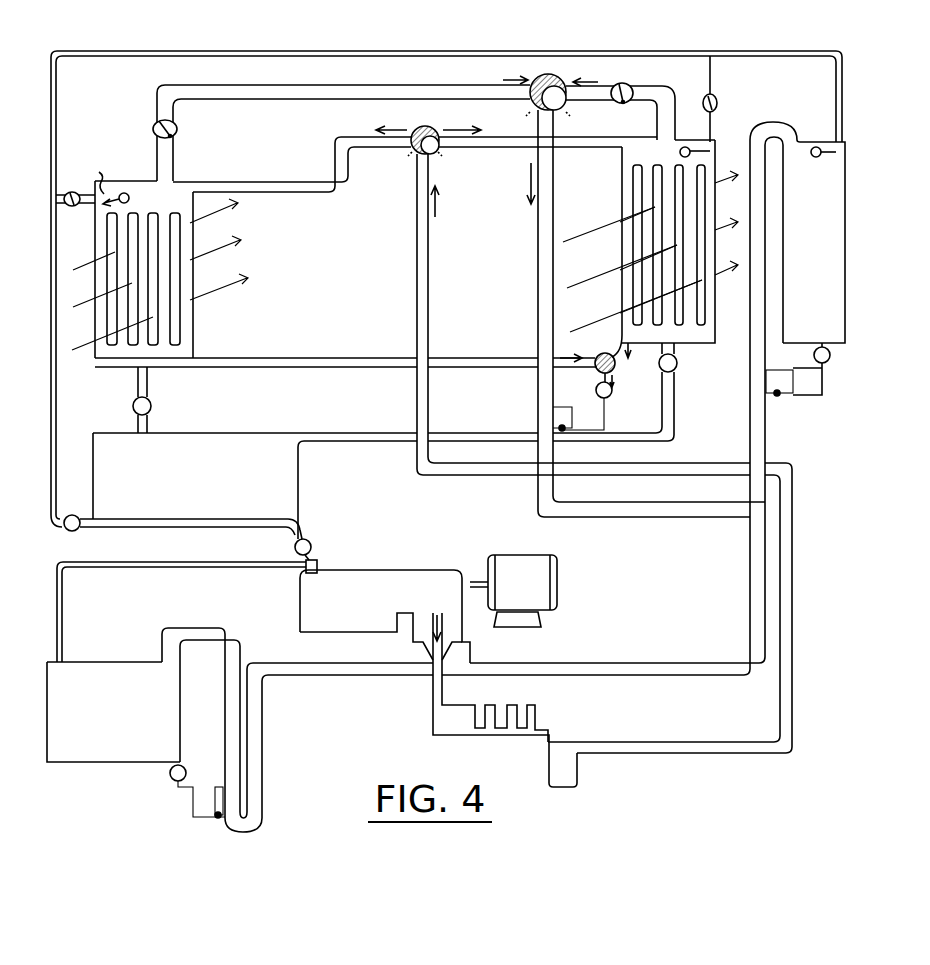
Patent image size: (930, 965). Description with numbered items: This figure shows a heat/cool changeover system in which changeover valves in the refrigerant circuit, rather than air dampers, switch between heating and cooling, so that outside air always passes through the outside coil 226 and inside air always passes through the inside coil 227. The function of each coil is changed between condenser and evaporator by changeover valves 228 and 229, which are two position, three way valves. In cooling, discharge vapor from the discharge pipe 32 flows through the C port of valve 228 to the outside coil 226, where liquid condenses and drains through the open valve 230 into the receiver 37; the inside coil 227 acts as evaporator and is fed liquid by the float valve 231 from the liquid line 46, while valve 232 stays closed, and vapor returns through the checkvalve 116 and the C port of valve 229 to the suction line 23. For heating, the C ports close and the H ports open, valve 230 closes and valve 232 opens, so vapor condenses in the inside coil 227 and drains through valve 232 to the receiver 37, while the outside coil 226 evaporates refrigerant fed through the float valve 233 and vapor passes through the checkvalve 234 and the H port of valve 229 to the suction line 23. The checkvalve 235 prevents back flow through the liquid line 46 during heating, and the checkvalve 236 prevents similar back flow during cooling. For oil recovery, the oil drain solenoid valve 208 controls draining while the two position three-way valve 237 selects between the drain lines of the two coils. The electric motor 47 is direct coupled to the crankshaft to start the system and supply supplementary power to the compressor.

The liquid line 46 is at (524, 51).
The changeover valve 229 is at (556, 76).
The checkvalve 116 is at (626, 82).
The checkvalve 235 is at (720, 108).
The float valve 231 is at (714, 144).
The changeover valve 228 is at (428, 126).
The inside coil 227 is at (646, 241).
The discharge pipe 32 is at (432, 317).
The outside coil 226 is at (334, 274).
The checkvalve 234 is at (182, 128).
The float valve 233 is at (103, 179).
The checkvalve 236 is at (75, 211).
The valve 230 is at (153, 406).
The valve 232 is at (679, 363).
The two position three-way valve 237 is at (618, 372).
The oil drain solenoid valve 208 is at (614, 392).
The receiver 37 is at (305, 490).
The electric motor 47 is at (562, 596).
The suction line 23 is at (678, 523).